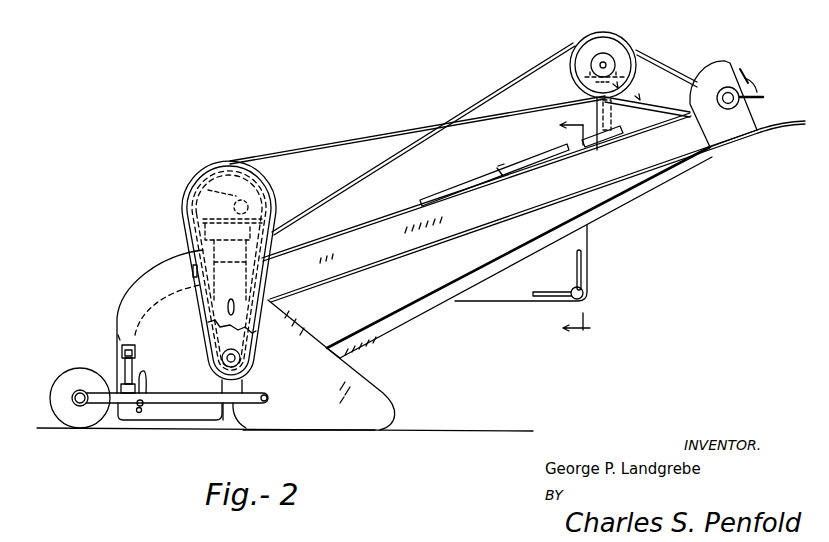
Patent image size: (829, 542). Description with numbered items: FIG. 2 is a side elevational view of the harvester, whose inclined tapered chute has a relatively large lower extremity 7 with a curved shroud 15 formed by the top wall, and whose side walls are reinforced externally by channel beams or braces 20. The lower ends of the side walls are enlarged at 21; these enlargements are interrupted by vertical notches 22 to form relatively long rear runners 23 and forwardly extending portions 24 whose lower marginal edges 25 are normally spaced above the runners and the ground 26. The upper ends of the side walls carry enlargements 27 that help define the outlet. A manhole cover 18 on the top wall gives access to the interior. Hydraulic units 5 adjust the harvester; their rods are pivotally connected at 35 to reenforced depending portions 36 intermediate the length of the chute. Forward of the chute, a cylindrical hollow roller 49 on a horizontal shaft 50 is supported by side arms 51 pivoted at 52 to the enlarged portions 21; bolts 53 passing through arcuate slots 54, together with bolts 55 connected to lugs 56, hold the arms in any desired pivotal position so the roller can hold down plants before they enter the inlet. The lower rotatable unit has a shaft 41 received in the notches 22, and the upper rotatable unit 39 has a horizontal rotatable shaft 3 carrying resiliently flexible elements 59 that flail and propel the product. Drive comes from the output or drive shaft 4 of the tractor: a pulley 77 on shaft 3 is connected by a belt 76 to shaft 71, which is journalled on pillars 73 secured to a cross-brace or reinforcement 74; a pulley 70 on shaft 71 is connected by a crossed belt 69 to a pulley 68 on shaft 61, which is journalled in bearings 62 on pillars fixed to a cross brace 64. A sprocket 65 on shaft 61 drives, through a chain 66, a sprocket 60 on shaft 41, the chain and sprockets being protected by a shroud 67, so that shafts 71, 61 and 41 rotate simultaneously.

The horizontal rotatable shaft 3 is at (728, 103).
The output or drive shaft 4 is at (624, 91).
The hydraulic units 5 is at (575, 228).
The lower extremity 7 is at (167, 313).
The shroud 15 is at (115, 317).
The manhole cover 18 is at (472, 185).
The channel beams or braces 20 is at (683, 147).
The enlargements 21 is at (256, 340).
The vertical notches 22 is at (238, 428).
The rear runners 23 is at (350, 431).
The forwardly extending portions 24 is at (167, 357).
The lower marginal edges 25 is at (203, 425).
The ground 26 is at (497, 429).
The enlargements 27 is at (695, 85).
The pivotal connection 35 is at (583, 286).
The reenforced depending portions 36 is at (582, 253).
The upper rotatable unit 39 is at (760, 81).
The shaft 41 is at (242, 360).
The cylindrical hollow roller 49 is at (72, 370).
The horizontal shaft 50 is at (72, 398).
The side arms 51 is at (258, 393).
The pivotal connection 52 is at (268, 399).
The bolts 53 is at (133, 421).
The arcuate slots 54 is at (147, 381).
The bolts 55 is at (122, 373).
The lugs 56 is at (122, 349).
The elements 59 is at (763, 97).
The sprocket 60 is at (252, 328).
The shaft 61 is at (186, 213).
The bearings 62 is at (185, 197).
The cross brace 64 is at (262, 278).
The sprocket 65 is at (197, 247).
The chain 66 is at (215, 335).
The shroud 67 is at (265, 177).
The pulley 68 is at (276, 192).
The crossed belt 69 is at (370, 140).
The pulley 70 is at (596, 33).
The shaft 71 is at (605, 57).
The pillars 73 is at (612, 118).
The cross-brace or reinforcement 74 is at (606, 138).
The belt 76 is at (672, 50).
The pulley 77 is at (748, 80).